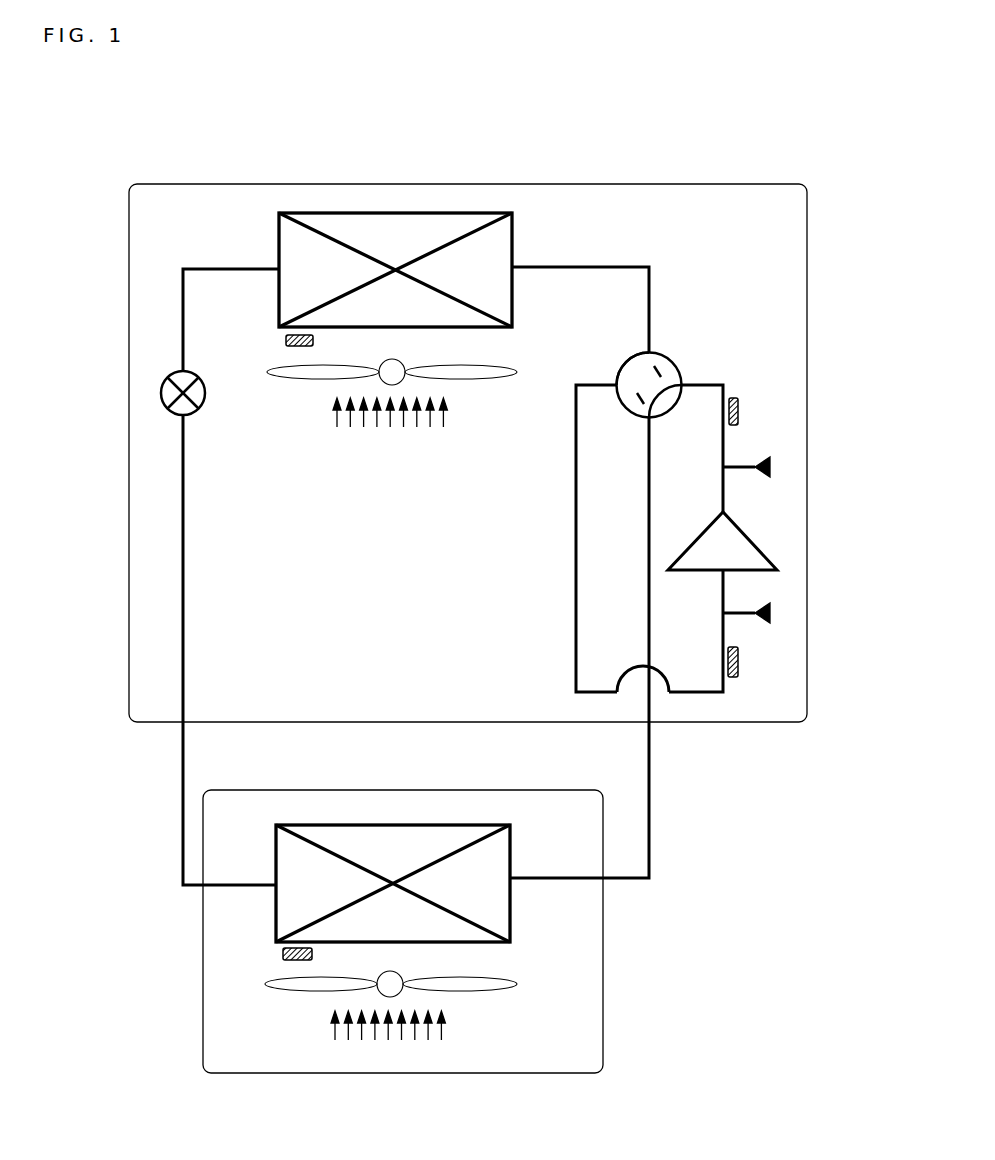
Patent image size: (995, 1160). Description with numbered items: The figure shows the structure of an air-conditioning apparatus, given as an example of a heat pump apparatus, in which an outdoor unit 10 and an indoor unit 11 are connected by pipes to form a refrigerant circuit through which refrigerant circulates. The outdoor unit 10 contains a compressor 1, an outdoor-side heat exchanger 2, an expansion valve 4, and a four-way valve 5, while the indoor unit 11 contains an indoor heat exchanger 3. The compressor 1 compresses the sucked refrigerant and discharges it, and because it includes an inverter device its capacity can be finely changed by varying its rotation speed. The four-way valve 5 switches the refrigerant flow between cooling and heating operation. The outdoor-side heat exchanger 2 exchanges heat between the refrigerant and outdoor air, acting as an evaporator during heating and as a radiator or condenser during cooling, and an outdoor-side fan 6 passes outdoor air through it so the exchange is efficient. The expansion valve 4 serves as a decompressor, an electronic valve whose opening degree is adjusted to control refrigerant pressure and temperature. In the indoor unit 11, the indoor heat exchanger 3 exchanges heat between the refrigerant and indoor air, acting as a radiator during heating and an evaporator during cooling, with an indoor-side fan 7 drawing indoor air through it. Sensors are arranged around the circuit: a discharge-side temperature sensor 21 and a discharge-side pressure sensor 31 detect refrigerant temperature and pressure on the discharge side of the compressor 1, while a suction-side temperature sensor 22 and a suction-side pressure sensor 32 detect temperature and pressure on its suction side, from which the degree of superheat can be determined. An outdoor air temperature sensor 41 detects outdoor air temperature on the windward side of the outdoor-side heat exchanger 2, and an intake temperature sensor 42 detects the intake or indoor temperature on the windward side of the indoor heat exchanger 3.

The compressor 1 is at (718, 523).
The outdoor-side heat exchanger 2 is at (427, 273).
The indoor heat exchanger 3 is at (424, 895).
The expansion valve 4 is at (209, 419).
The four-way valve 5 is at (667, 358).
The outdoor-side fan 6 is at (411, 396).
The indoor-side fan 7 is at (407, 1007).
The outdoor unit 10 is at (468, 478).
The indoor unit 11 is at (449, 931).
The discharge-side temperature sensor 21 is at (762, 427).
The suction-side temperature sensor 22 is at (761, 679).
The discharge-side pressure sensor 31 is at (779, 494).
The suction-side pressure sensor 32 is at (779, 637).
The outdoor air temperature sensor 41 is at (278, 367).
The intake temperature sensor 42 is at (276, 982).